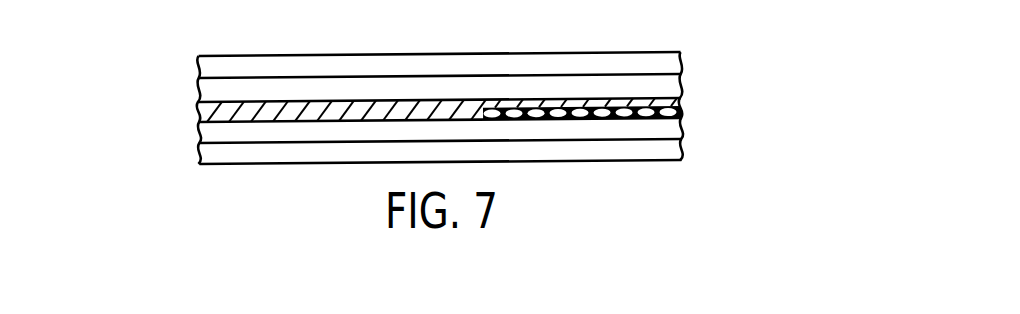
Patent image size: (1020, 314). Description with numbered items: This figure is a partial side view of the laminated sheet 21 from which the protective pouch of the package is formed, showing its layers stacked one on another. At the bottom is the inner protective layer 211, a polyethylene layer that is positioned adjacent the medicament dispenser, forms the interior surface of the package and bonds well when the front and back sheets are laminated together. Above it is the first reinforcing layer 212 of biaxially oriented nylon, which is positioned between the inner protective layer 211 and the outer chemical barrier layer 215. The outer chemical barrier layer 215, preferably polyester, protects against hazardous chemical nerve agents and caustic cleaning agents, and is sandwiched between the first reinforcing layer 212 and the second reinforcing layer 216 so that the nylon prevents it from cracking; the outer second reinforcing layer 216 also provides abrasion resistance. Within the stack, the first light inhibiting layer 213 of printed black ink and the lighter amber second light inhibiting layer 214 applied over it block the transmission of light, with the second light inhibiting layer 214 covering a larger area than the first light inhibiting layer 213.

The laminated sheet 21 is at (162, 134).
The inner protective layer 211 is at (678, 157).
The first reinforcing layer 212 is at (680, 126).
The first light inhibiting layer 213 is at (678, 112).
The second light inhibiting layer 214 is at (680, 102).
The outer chemical barrier layer 215 is at (683, 83).
The second reinforcing layer 216 is at (683, 58).